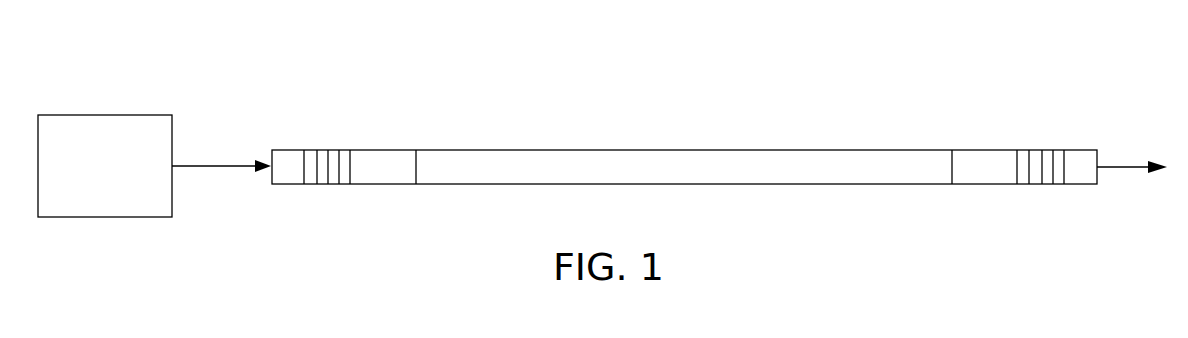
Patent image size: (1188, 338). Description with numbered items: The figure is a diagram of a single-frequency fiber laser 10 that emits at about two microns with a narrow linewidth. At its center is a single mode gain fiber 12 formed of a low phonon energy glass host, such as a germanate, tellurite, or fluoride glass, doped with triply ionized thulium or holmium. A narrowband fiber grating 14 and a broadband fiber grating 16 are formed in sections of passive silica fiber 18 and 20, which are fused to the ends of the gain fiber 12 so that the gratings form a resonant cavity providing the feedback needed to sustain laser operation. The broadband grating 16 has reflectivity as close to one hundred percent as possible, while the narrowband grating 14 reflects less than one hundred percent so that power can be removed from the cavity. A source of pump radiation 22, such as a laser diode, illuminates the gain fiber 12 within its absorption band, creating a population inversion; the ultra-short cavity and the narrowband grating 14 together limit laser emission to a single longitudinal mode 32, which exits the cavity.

The fiber laser 10 is at (698, 159).
The single mode gain fiber 12 is at (628, 150).
The narrowband fiber grating 14 is at (328, 150).
The broadband fiber grating 16 is at (1030, 150).
The passive silica fiber section 18 is at (382, 184).
The passive silica fiber section 20 is at (985, 185).
The source of pump radiation 22 is at (126, 114).
The single longitudinal mode 32 is at (1122, 165).